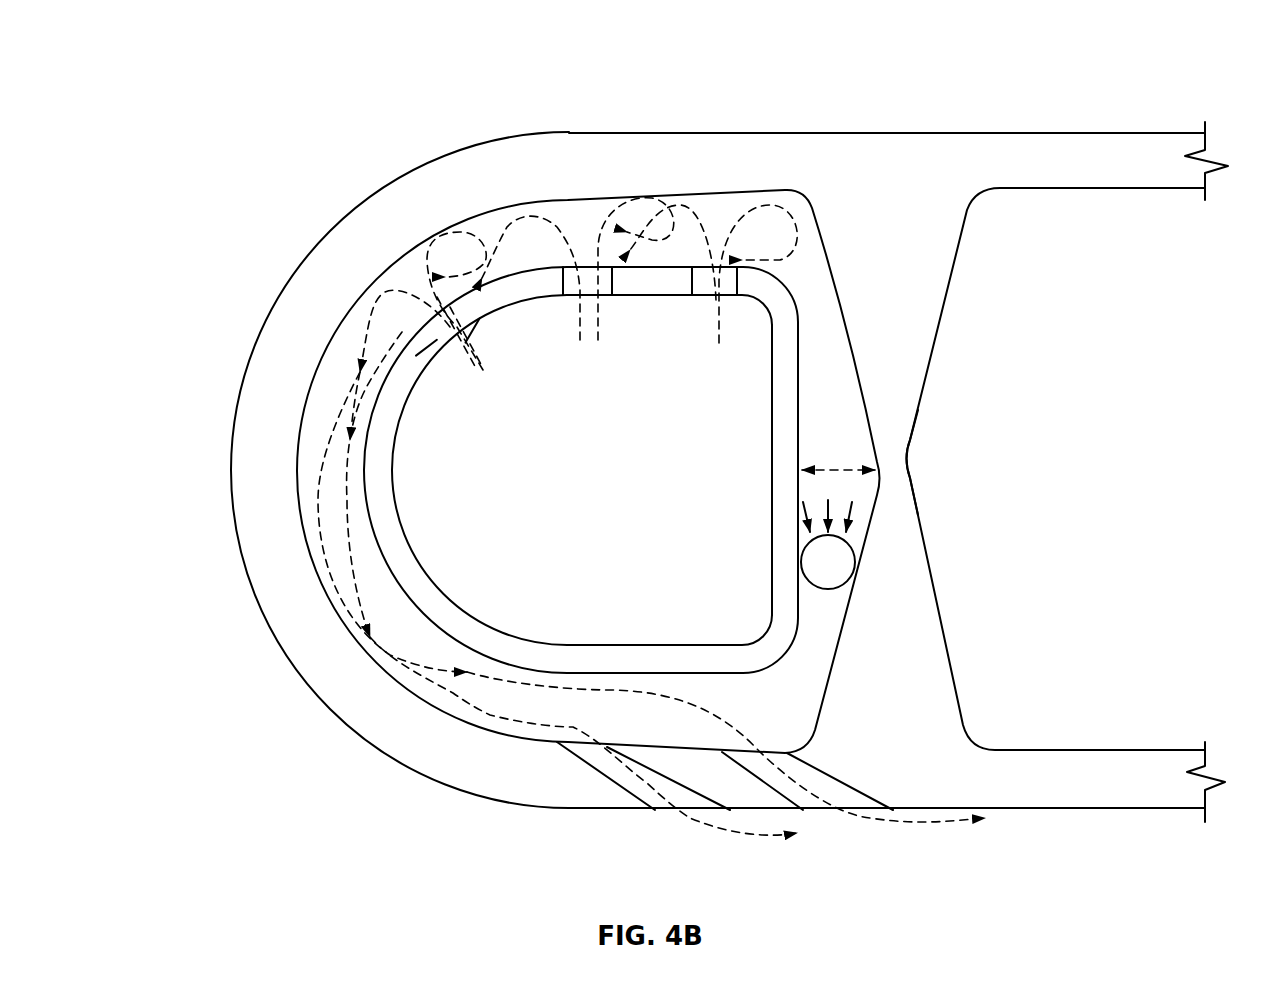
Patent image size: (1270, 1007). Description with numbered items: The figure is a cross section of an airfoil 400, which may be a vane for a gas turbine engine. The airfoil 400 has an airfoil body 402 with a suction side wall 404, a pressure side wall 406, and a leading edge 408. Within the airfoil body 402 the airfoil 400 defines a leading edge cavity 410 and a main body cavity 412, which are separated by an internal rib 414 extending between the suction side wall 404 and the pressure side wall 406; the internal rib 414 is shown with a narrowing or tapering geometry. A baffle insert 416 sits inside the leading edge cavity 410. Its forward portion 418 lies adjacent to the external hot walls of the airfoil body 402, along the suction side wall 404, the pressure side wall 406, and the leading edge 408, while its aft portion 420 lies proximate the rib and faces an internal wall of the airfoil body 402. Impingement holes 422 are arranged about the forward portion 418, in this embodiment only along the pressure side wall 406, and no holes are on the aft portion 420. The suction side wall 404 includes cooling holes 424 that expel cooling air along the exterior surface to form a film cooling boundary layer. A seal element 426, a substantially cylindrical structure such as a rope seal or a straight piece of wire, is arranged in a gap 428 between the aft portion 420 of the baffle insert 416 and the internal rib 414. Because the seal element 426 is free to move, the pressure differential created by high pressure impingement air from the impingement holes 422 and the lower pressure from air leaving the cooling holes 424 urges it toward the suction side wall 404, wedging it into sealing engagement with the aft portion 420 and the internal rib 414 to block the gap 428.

The airfoil 400 is at (190, 62).
The airfoil body 402 is at (977, 158).
The suction side wall 404 is at (1085, 809).
The pressure side wall 406 is at (897, 132).
The leading edge 408 is at (231, 478).
The leading edge cavity 410 is at (773, 215).
The main body cavity 412 is at (1140, 220).
The internal rib 414 is at (893, 403).
The baffle insert 416 is at (548, 648).
The forward portion 418 is at (433, 592).
The aft portion 420 is at (775, 455).
The impingement holes 422 is at (606, 306).
The cooling holes 424 is at (672, 815).
The seal element 426 is at (827, 562).
The gap 428 is at (845, 472).